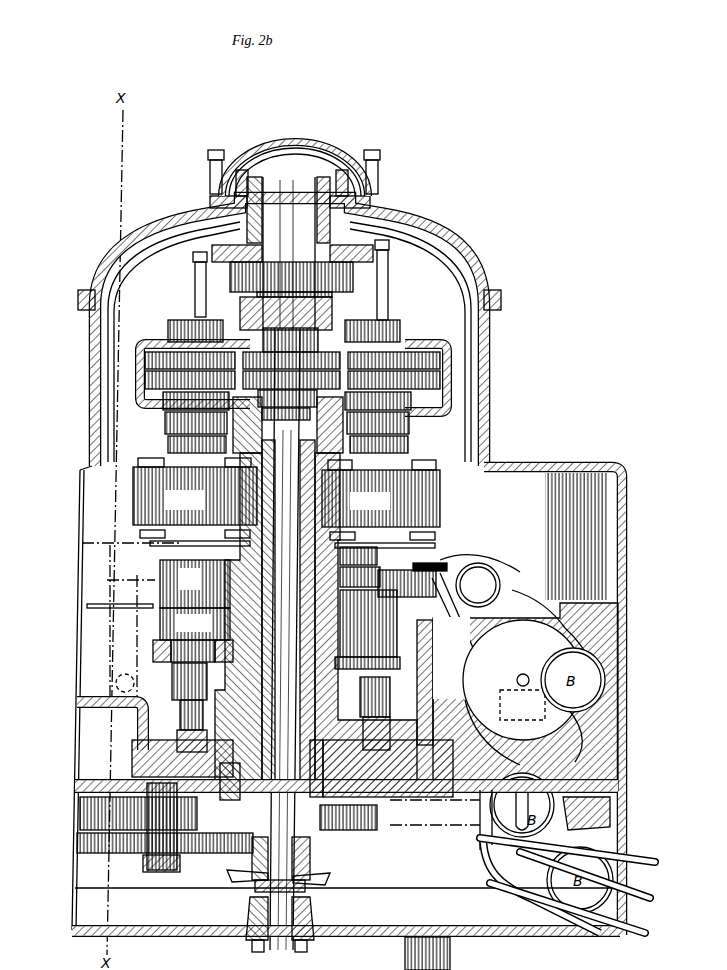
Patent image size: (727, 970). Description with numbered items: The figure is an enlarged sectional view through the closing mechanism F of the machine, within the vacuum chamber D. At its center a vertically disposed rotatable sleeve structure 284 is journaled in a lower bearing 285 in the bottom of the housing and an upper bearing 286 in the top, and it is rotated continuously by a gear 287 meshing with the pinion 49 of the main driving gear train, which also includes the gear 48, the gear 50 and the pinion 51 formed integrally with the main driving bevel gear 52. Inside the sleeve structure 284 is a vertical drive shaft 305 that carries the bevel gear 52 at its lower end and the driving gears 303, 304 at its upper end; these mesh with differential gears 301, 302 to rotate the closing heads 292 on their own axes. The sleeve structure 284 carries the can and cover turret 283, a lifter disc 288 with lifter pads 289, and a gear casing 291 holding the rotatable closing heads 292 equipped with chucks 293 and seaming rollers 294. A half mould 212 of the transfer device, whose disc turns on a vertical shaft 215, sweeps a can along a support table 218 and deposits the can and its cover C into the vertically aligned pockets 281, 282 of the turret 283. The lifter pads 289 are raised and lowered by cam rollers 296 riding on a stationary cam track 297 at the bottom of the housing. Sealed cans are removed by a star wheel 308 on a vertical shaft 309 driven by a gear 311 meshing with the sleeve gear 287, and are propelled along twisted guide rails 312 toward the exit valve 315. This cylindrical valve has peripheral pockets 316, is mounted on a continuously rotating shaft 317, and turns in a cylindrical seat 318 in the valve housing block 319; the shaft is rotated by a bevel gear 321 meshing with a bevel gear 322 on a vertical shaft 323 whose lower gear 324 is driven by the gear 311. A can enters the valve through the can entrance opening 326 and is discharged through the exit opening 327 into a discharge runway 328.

The upper bearing 286 is at (270, 297).
The gear casing 291 is at (289, 331).
The driving gear 303 is at (291, 280).
The driving gear 304 is at (288, 563).
The differential gear 301 is at (150, 358).
The differential gear 302 is at (150, 380).
The sleeve structure 284 is at (262, 712).
The lower bearing 285 is at (358, 615).
The closing head 292 is at (456, 487).
The vertical drive shaft 305 is at (335, 506).
The chuck 293 is at (170, 530).
The seaming roller 294 is at (150, 543).
The half mould 212 is at (78, 568).
The support table 218 is at (90, 606).
The turret 283 is at (195, 600).
The lifter pad 289 is at (170, 625).
The lifter disc 288 is at (153, 652).
The vertical shaft 215 is at (141, 682).
The cam roller 296 is at (180, 712).
The cam track 297 is at (140, 744).
The pocket 282 is at (372, 552).
The pocket 281 is at (375, 570).
The valve housing block 319 is at (590, 590).
The exit valve 315 is at (578, 630).
The bevel gear 321 is at (568, 662).
The can entrance opening 326 is at (538, 609).
The bevel gear 322 is at (560, 730).
The cylindrical seat 318 is at (478, 743).
The shaft 317 is at (520, 675).
The peripheral pocket 316 is at (528, 628).
The star wheel 308 is at (480, 581).
The guide rails 312 is at (500, 580).
The vertical shaft 309 is at (500, 595).
The pinion 49 is at (140, 790).
The gear 48 is at (90, 810).
The gear 50 is at (85, 845).
The pinion 51 is at (312, 852).
The main driving bevel gear 52 is at (318, 880).
The gear 287 is at (378, 818).
The exit opening 327 is at (483, 802).
The gear 311 is at (480, 835).
The vertical shaft 323 is at (586, 813).
The gear 324 is at (484, 860).
The discharge runway 328 is at (512, 885).
The closing mechanism F is at (440, 207).
The vacuum chamber D is at (462, 447).
The cover C is at (160, 553).